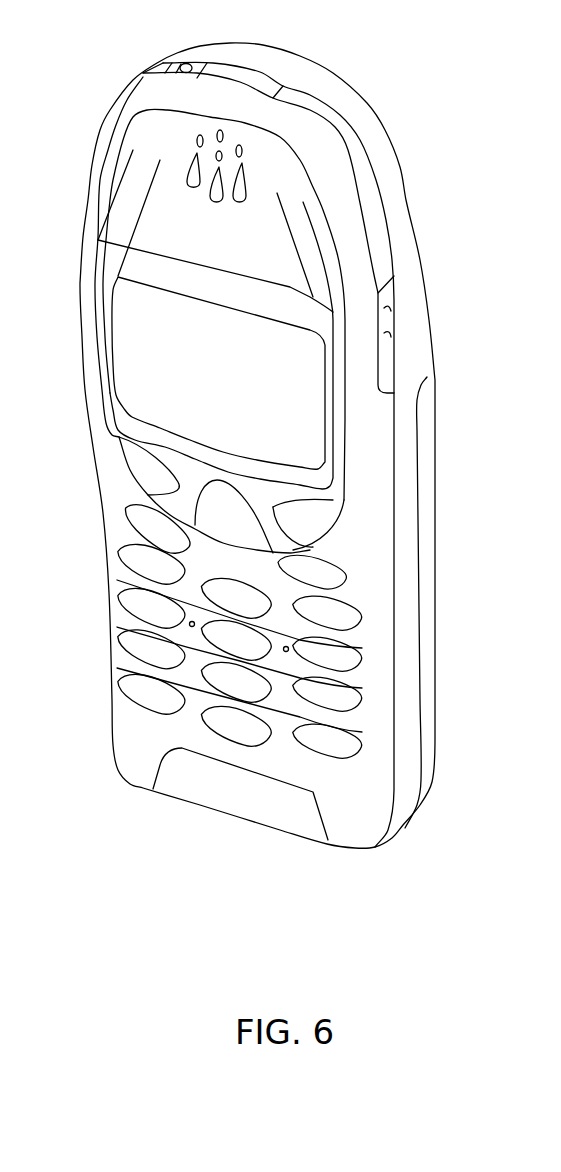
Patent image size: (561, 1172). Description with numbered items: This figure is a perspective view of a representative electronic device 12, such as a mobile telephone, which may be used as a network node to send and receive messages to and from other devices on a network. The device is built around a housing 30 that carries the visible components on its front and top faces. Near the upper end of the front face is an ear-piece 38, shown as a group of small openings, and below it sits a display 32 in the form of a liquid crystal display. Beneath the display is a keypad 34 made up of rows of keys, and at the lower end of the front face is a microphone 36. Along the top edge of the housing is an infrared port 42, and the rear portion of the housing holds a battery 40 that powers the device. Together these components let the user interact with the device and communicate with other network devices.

The mobile communication device 12 is at (377, 50).
The housing 30 is at (402, 207).
The display 32 is at (300, 413).
The keypad 34 is at (325, 747).
The microphone 36 is at (180, 783).
The ear-piece 38 is at (193, 163).
The battery 40 is at (428, 728).
The infrared port 42 is at (242, 77).